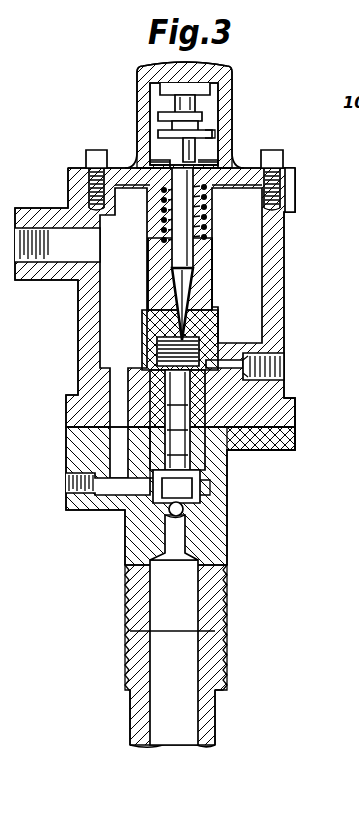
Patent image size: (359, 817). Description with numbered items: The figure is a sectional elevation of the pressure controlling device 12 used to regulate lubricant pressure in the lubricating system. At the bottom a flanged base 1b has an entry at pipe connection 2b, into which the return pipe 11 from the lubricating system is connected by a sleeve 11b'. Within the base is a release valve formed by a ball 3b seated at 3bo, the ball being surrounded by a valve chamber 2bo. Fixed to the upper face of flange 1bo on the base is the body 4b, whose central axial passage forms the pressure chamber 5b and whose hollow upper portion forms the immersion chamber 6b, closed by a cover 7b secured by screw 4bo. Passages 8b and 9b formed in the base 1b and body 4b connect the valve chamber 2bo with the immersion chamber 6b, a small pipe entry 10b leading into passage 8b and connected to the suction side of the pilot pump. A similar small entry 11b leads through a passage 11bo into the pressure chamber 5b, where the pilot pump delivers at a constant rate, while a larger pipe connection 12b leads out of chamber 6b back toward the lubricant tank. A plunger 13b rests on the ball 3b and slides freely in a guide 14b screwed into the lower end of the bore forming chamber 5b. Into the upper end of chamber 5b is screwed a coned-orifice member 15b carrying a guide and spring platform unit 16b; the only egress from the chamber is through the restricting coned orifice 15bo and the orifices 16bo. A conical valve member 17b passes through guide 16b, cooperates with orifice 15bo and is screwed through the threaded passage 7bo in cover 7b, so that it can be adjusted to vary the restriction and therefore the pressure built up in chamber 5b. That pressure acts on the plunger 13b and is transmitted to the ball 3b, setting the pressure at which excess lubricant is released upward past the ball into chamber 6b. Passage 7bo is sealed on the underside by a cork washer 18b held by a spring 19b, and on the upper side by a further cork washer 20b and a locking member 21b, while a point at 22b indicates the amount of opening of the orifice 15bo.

The flanged base 1b is at (230, 462).
The flange 1bo is at (292, 450).
The pipe connection 2b is at (127, 568).
The valve chamber 2bo is at (185, 510).
The ball 3b is at (170, 516).
The ball seat 3bo is at (192, 520).
The body 4b is at (285, 350).
The screw 4bo is at (90, 165).
The pressure chamber 5b is at (151, 380).
The immersion chamber 6b is at (272, 322).
The cover 7b is at (290, 180).
The threaded passage 7bo is at (196, 158).
The passage 8b is at (82, 466).
The passage 9b is at (122, 405).
The small pipe entry 10b is at (70, 486).
The return pipe 11 is at (178, 740).
The small entry 11b is at (295, 373).
The sleeve 11b' is at (208, 630).
The passage 11bo is at (244, 310).
The pressure controlling device 12 is at (200, 86).
The pipe connection 12b is at (14, 263).
The plunger 13b is at (194, 486).
The guide 14b is at (283, 408).
The coned-orifice member 15b is at (156, 345).
The coned orifice 15bo is at (150, 330).
The guide and spring platform unit 16b is at (149, 282).
The orifices 16bo is at (217, 298).
The conical valve member 17b is at (214, 256).
The cork washer 18b is at (72, 192).
The spring 19b is at (210, 216).
The cork washer 20b is at (208, 141).
The locking member 21b is at (172, 150).
The pointer 22b is at (158, 117).